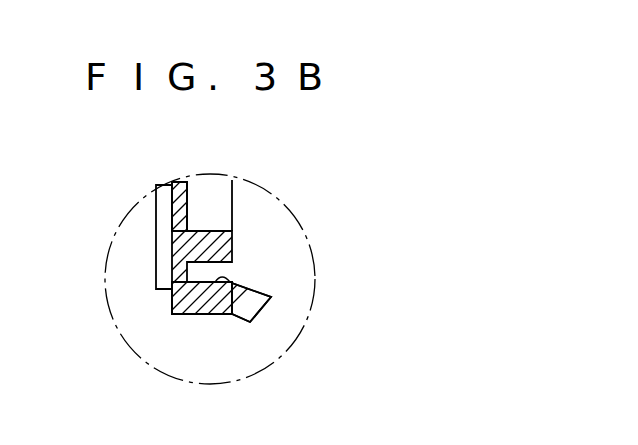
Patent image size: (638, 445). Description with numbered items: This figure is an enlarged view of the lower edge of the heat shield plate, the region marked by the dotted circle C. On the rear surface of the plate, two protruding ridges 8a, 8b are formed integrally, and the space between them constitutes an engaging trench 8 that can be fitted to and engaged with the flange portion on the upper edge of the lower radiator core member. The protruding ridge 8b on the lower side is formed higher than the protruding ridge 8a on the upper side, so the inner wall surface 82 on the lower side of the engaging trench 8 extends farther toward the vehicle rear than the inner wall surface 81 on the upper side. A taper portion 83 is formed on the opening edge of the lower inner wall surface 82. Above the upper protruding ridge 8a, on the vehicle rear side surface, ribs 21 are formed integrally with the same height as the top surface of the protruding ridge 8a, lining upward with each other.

The rib 21 is at (215, 197).
The engaging trench 8 is at (223, 270).
The protruding ridge 8a is at (232, 223).
The protruding ridge 8b is at (197, 303).
The inner wall surface 81 is at (180, 277).
The inner wall surface 82 is at (231, 314).
The taper portion 83 is at (230, 281).
The circle C is at (295, 340).